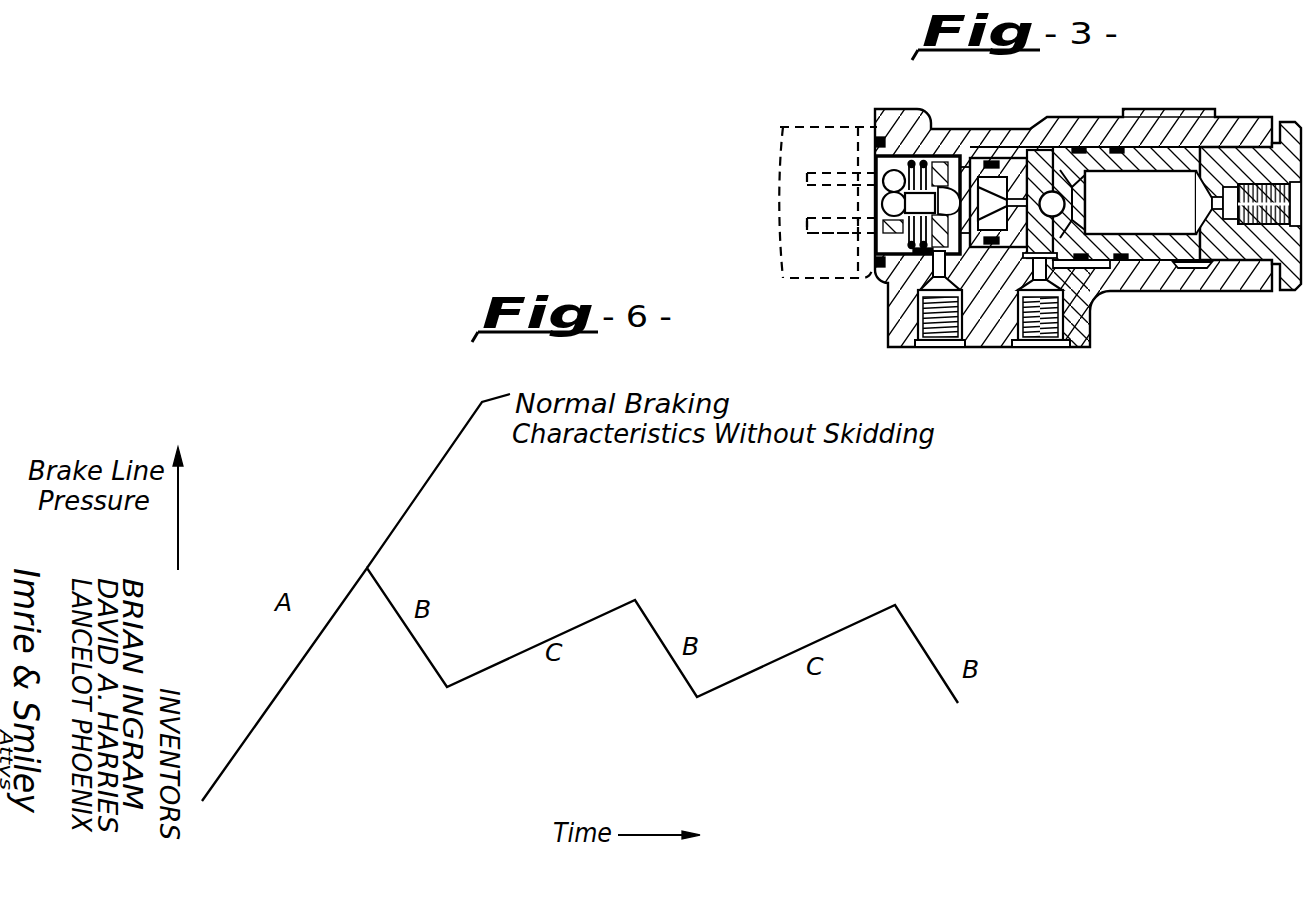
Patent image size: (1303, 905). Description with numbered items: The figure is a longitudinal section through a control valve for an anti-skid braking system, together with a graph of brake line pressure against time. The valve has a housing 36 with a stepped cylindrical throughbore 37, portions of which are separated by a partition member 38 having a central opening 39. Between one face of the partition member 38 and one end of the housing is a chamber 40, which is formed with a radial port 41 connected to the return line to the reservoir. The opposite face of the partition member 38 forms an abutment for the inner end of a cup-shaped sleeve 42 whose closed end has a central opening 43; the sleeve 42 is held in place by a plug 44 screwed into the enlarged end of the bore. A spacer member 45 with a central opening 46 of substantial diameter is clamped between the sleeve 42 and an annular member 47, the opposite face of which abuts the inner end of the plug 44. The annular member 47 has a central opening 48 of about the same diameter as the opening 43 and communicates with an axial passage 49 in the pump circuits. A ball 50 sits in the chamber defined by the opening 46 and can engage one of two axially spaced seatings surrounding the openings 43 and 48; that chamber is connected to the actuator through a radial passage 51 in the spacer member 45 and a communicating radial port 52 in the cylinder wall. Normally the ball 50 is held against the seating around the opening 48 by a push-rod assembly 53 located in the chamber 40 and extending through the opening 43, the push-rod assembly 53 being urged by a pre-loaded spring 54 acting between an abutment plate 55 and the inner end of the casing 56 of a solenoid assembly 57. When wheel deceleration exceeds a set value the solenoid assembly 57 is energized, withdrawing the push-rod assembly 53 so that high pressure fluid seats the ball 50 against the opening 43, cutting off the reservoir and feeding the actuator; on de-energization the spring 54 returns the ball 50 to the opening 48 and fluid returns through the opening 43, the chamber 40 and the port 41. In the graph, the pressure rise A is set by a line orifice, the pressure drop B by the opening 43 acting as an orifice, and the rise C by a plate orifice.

The housing 36 is at (1148, 132).
The stepped cylindrical throughbore 37 is at (1060, 148).
The partition member 38 is at (967, 160).
The central opening 39 is at (963, 180).
The chamber 40 is at (895, 147).
The radial port 41 is at (936, 253).
The cup-shaped sleeve 42 is at (1002, 130).
The central opening 43 is at (1028, 204).
The plug 44 is at (1220, 170).
The spacer member 45 is at (1063, 268).
The central opening 46 is at (1050, 205).
The annular member 47 is at (1073, 165).
The central opening 48 is at (1173, 201).
The axial passage 49 is at (1212, 266).
The ball 50 is at (1063, 292).
The radial passage 51 is at (1025, 284).
The radial port 52 is at (1042, 262).
The push-rod assembly 53 is at (925, 253).
The pre-loaded spring 54 is at (912, 160).
The abutment plate 55 is at (943, 157).
The casing 56 is at (808, 150).
The solenoid assembly 57 is at (825, 225).